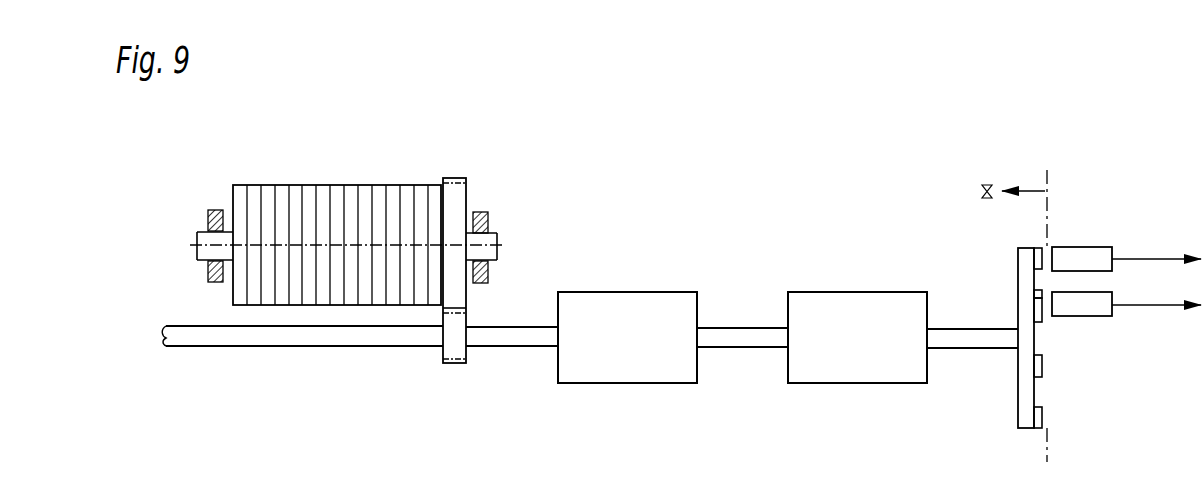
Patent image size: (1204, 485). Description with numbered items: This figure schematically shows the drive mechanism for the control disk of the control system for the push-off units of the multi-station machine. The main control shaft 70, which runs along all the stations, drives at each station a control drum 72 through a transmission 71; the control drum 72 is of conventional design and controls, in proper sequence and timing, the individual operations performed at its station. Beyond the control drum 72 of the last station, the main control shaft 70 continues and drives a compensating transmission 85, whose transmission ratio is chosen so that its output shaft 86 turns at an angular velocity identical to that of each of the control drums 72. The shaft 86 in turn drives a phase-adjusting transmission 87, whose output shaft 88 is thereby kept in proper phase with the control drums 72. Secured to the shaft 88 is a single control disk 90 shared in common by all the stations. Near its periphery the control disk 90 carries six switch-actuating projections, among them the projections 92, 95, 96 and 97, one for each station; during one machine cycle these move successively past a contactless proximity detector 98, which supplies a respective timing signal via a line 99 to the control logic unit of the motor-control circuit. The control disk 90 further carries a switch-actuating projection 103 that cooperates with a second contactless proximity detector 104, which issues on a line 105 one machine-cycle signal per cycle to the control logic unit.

The main control shaft 70 is at (236, 347).
The transmission 71 is at (470, 318).
The control drum 72 is at (335, 184).
The compensating transmission 85 is at (618, 384).
The output shaft 86 is at (752, 348).
The phase-adjusting transmission 87 is at (847, 384).
The output shaft 88 is at (993, 349).
The control disk 90 is at (1016, 411).
The switch-actuating projection 92 is at (1038, 248).
The switch-actuating projection 95 is at (1041, 417).
The switch-actuating projection 96 is at (1041, 367).
The switch-actuating projection 97 is at (1039, 323).
The contactless proximity detector 98 is at (1087, 247).
The line 99 is at (1170, 260).
The switch-actuating projection 103 is at (1037, 292).
The contactless proximity detector 104 is at (1083, 317).
The line 105 is at (1170, 306).